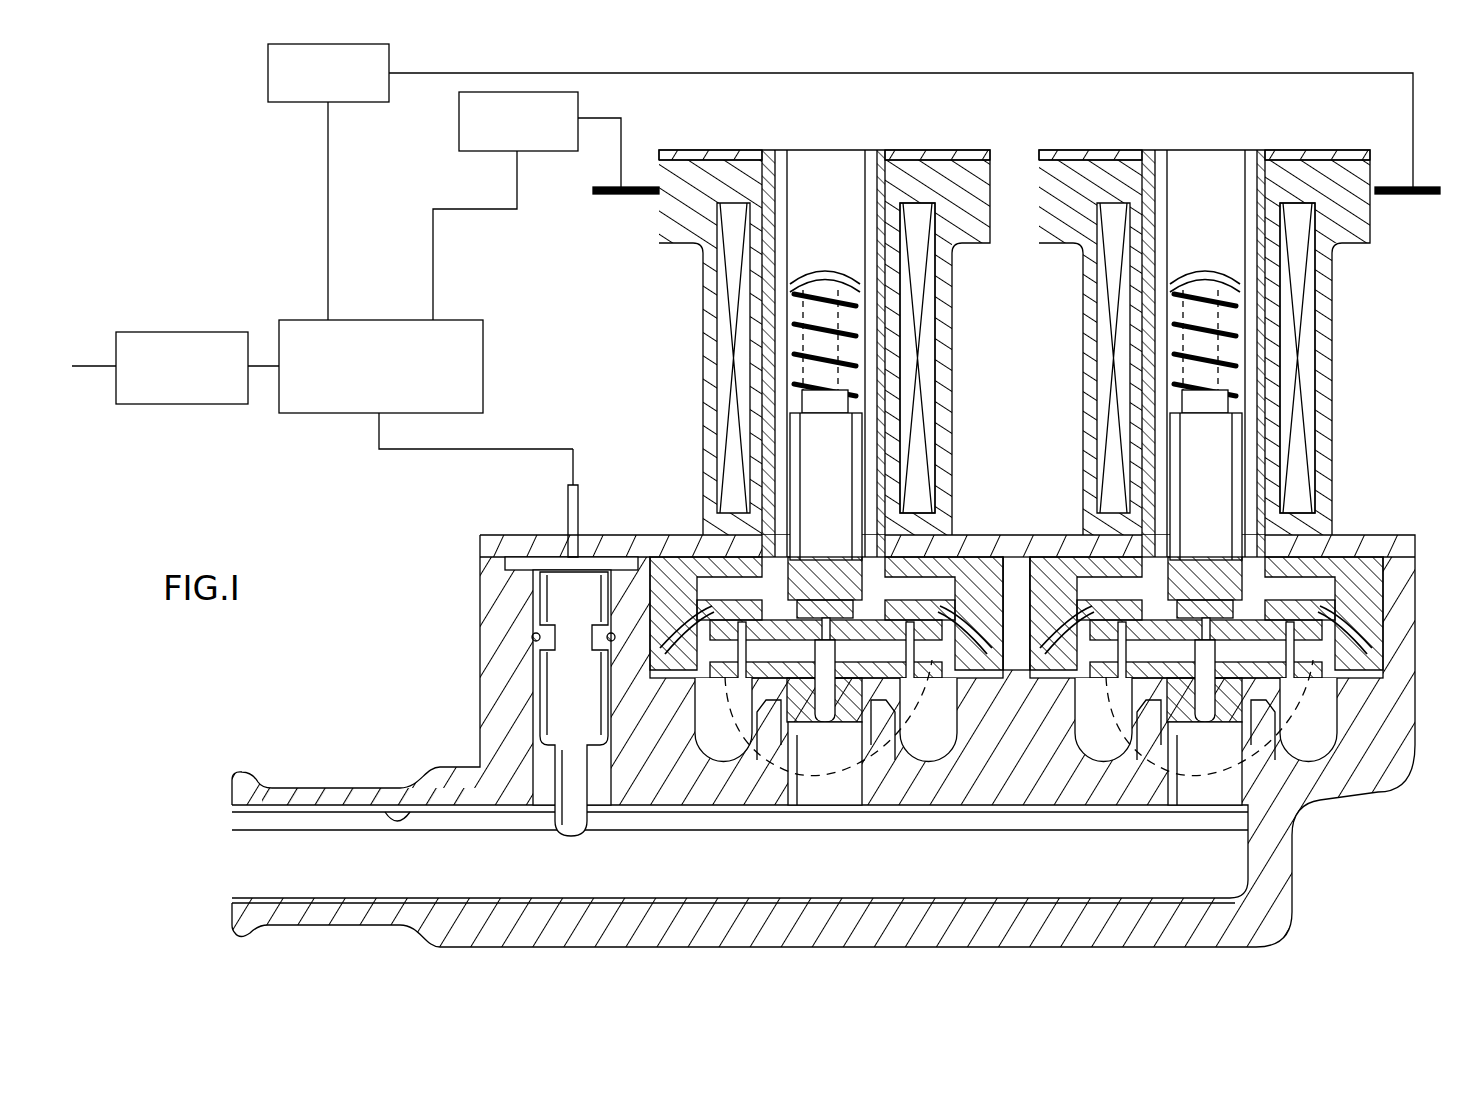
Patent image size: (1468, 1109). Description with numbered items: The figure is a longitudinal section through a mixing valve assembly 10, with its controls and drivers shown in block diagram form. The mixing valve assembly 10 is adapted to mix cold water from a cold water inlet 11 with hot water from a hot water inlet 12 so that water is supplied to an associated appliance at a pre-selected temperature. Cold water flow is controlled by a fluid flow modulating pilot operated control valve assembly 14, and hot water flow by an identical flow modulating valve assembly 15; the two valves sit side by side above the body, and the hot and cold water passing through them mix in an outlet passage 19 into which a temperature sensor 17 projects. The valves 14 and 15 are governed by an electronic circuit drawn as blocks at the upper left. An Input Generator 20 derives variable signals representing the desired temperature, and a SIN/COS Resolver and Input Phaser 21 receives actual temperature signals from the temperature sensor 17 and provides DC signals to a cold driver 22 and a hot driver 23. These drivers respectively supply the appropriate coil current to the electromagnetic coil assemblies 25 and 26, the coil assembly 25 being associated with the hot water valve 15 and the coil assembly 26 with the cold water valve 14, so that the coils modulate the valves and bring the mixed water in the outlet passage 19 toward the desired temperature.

The mixing valve assembly 10 is at (1348, 470).
The cold water inlet 11 is at (742, 737).
The hot water inlet 12 is at (1114, 705).
The fluid flow modulating pilot operated control valve assembly 14 is at (695, 458).
The flow modulating valve assembly 15 is at (1078, 462).
The temperature sensor 17 is at (532, 758).
The outlet passage 19 is at (377, 805).
The Input Generator 20 is at (190, 328).
The SIN/COS Resolver and Input Phaser 21 is at (303, 318).
The cold driver 22 is at (268, 82).
The hot driver 23 is at (459, 130).
The electromagnetic coil assembly 25 is at (1332, 370).
The electromagnetic coil assembly 26 is at (950, 350).